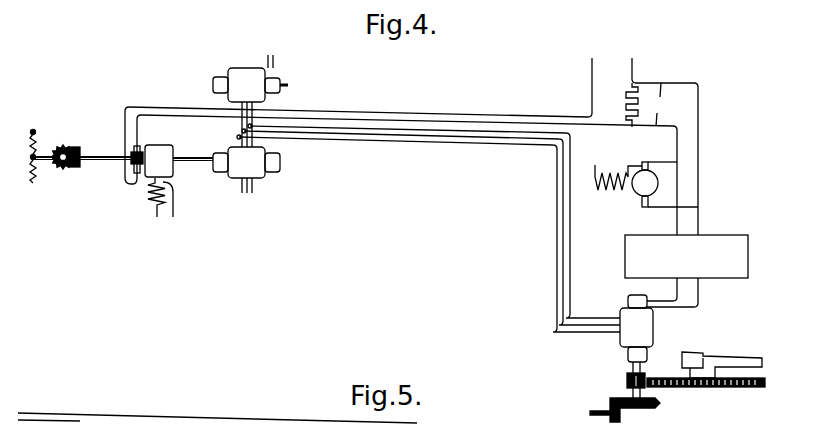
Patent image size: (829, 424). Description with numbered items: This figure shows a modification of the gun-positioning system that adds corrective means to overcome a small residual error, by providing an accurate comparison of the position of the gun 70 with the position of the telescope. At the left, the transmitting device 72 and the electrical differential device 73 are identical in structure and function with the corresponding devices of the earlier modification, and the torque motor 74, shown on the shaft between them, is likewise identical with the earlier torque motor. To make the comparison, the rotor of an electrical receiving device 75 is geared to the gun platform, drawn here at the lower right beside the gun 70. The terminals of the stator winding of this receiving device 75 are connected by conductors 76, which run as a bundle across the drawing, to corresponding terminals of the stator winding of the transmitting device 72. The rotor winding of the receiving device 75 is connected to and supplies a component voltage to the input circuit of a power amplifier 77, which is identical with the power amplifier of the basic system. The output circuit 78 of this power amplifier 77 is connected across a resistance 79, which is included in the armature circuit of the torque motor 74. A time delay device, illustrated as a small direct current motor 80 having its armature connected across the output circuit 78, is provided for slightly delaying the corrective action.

The gun 70 is at (728, 357).
The transmitting device 72 is at (250, 78).
The electrical differential device 73 is at (246, 147).
The torque motor 74 is at (159, 181).
The electrical receiving device 75 is at (636, 328).
The conductors 76 is at (553, 224).
The power amplifier 77 is at (686, 256).
The output circuit 78 is at (661, 104).
The resistance 79 is at (626, 105).
The direct current motor 80 is at (640, 180).